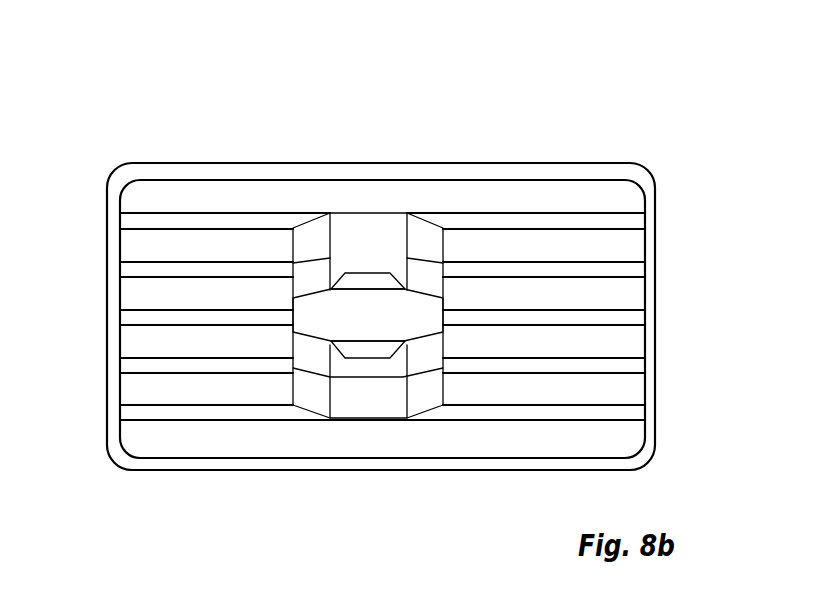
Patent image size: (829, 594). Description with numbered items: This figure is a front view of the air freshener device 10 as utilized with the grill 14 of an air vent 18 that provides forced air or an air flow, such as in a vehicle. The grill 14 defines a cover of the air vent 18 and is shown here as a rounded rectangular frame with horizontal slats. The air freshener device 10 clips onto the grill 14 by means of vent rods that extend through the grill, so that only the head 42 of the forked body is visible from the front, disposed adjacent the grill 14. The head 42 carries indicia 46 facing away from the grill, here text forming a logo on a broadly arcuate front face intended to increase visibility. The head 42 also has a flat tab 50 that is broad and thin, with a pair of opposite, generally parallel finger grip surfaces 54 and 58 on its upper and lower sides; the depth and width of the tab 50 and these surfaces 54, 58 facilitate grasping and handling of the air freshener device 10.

The air freshener device 10 is at (291, 208).
The grill 14 is at (613, 265).
The air vent 18 is at (473, 163).
The head 42 is at (372, 243).
The indicia 46 is at (382, 333).
The flat tab 50 is at (403, 343).
The finger grip surface 54 is at (328, 290).
The finger grip surface 58 is at (322, 340).